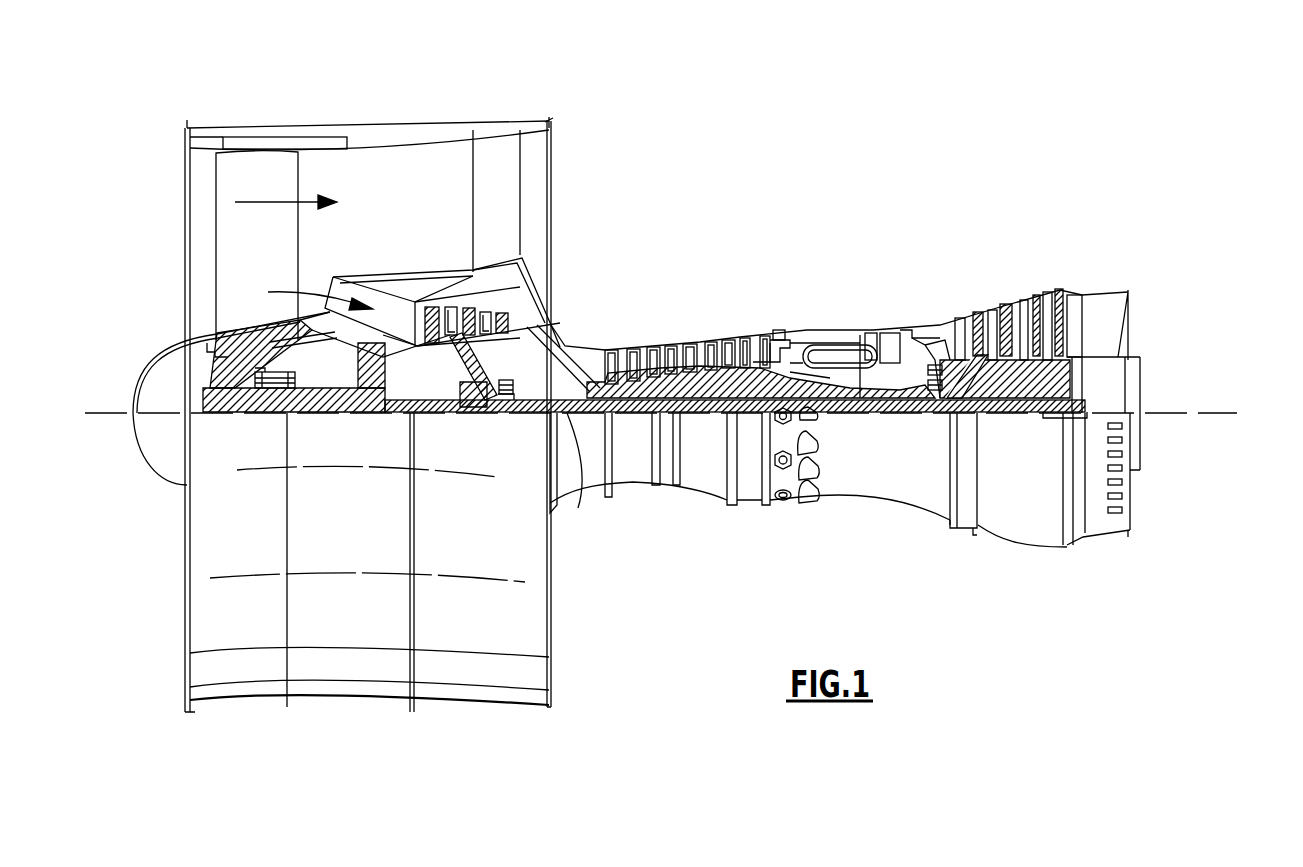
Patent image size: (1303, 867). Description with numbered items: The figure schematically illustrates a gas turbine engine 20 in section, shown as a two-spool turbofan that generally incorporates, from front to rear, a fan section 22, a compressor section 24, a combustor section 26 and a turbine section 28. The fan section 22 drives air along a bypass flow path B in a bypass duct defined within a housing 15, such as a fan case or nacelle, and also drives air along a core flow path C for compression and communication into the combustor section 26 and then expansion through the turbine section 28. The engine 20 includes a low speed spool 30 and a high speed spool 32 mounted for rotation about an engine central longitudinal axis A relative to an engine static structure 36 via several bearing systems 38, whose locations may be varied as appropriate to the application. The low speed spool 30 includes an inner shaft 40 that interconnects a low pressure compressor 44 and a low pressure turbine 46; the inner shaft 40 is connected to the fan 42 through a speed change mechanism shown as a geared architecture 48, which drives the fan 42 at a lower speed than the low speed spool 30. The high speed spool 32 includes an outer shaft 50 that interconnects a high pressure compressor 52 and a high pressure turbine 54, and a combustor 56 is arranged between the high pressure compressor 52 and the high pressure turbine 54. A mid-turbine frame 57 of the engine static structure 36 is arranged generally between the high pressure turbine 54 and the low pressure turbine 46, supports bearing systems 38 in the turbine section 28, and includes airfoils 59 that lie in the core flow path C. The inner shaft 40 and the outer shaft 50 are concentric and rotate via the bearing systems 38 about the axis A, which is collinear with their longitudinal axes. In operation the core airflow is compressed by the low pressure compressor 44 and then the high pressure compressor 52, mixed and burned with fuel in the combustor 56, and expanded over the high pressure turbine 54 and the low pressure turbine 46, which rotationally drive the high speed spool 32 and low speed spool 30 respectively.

The housing 15 is at (369, 132).
The gas turbine engine 20 is at (832, 174).
The fan section 22 is at (296, 112).
The compressor section 24 is at (604, 312).
The combustor section 26 is at (824, 298).
The turbine section 28 is at (972, 264).
The low speed spool 30 is at (707, 432).
The high speed spool 32 is at (754, 360).
The engine static structure 36 is at (748, 436).
The bearing systems 38 is at (508, 402).
The inner shaft 40 is at (578, 508).
The fan 42 is at (273, 258).
The low pressure compressor 44 is at (472, 320).
The low pressure turbine 46 is at (1015, 300).
The geared architecture 48 is at (375, 396).
The outer shaft 50 is at (837, 401).
The high pressure compressor 52 is at (688, 345).
The high pressure turbine 54 is at (895, 330).
The combustor 56 is at (821, 352).
The mid-turbine frame 57 is at (938, 318).
The airfoils 59 is at (945, 372).
The engine central longitudinal axis A is at (1226, 413).
The bypass flow path B is at (272, 200).
The core flow path C is at (311, 292).